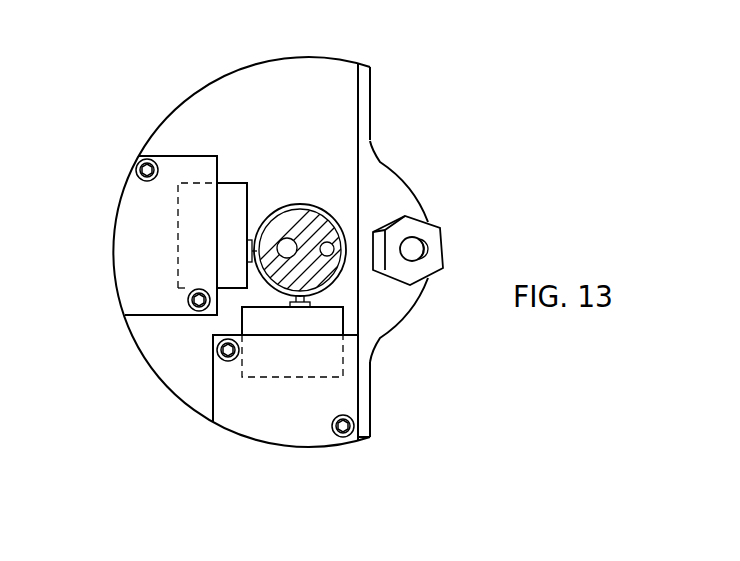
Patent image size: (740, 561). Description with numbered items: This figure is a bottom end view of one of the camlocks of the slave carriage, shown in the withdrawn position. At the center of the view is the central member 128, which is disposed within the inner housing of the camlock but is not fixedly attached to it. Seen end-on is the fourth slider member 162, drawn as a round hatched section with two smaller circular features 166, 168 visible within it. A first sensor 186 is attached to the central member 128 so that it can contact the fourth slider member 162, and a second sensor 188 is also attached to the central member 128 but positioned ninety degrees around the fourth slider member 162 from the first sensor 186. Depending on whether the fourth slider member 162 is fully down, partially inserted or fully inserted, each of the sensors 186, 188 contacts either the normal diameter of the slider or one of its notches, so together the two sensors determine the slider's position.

The central member 128 is at (125, 220).
The fourth slider member 162 is at (317, 204).
The bore 166 is at (285, 238).
The small bore 168 is at (332, 243).
The first sensor 186 is at (233, 192).
The second sensor 188 is at (330, 323).